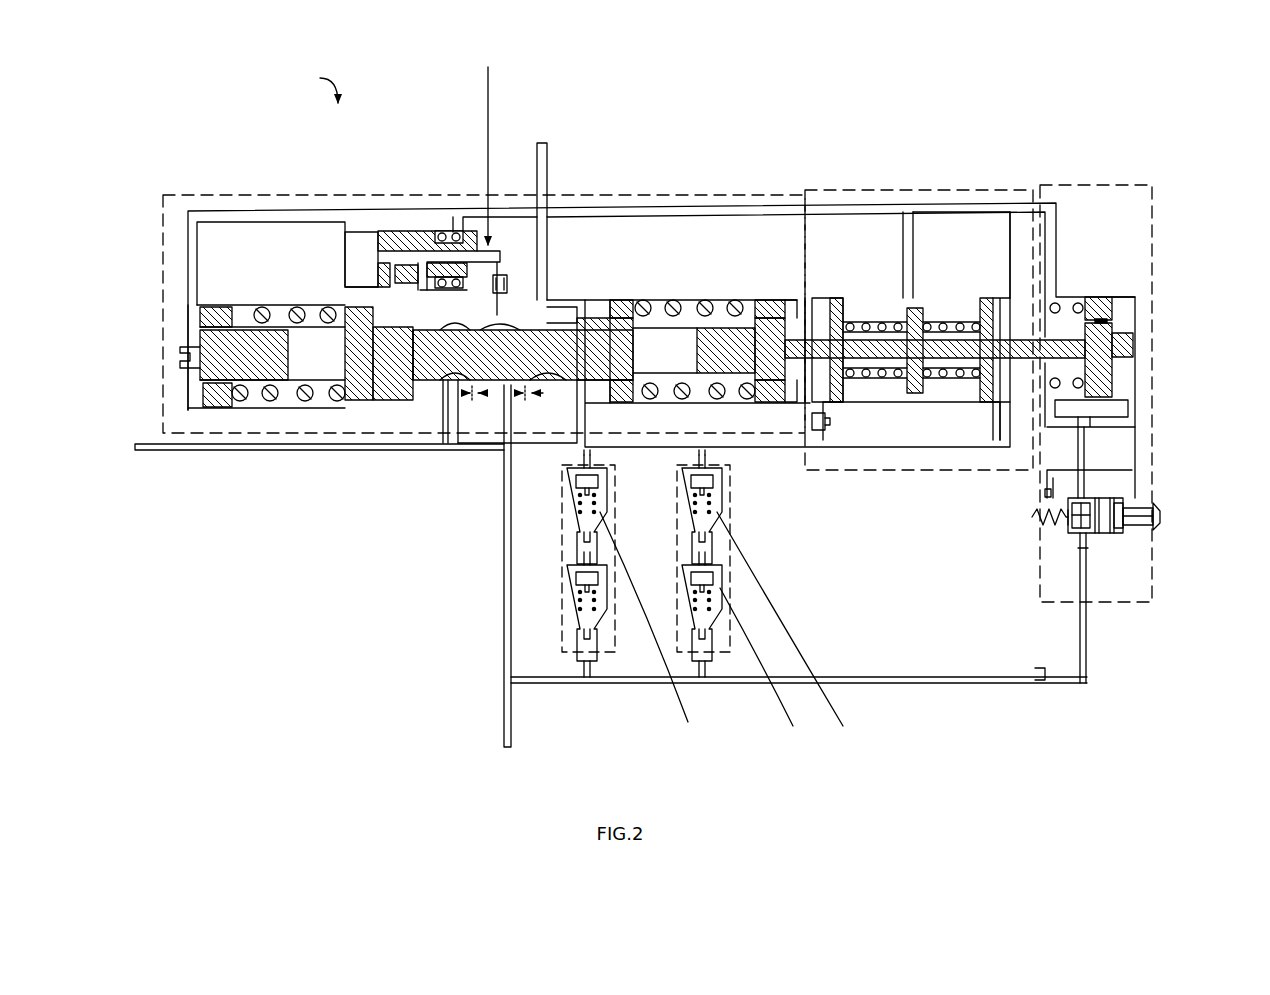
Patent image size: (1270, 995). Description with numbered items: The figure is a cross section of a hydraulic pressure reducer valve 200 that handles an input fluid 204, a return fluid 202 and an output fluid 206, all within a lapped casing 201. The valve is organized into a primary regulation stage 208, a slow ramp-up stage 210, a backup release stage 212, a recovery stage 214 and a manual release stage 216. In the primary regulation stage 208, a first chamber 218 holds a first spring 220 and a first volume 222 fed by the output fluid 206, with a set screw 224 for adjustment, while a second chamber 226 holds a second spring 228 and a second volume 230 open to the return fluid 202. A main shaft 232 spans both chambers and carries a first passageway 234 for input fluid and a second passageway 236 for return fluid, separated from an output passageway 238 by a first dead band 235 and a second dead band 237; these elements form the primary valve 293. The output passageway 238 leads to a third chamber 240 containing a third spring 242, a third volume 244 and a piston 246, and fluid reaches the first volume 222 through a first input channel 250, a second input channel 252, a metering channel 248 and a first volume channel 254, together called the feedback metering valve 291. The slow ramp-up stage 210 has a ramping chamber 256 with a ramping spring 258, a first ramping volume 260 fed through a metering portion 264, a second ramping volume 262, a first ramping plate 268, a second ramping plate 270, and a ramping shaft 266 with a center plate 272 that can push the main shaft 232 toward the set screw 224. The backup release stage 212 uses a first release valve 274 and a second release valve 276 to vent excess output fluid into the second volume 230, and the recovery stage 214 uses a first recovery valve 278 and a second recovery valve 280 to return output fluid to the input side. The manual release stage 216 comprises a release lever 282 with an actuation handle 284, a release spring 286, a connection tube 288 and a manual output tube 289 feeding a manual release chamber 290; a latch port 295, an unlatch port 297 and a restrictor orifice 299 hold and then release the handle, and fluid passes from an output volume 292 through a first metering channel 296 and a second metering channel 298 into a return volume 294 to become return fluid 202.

The pressure reducer valve 200 is at (310, 85).
The casing 201 is at (485, 141).
The return fluid 202 is at (547, 143).
The input fluid 204 is at (141, 451).
The output fluid 206 is at (504, 570).
The primary regulation stage 208 is at (320, 195).
The slow ramp-up stage 210 is at (878, 190).
The backup release stage 212 is at (615, 640).
The recovery stage 214 is at (730, 640).
The manual release stage 216 is at (1152, 600).
The first chamber 218 is at (186, 307).
The first spring 220 is at (258, 307).
The first volume 222 is at (290, 307).
The set screw 224 is at (184, 352).
The second chamber 226 is at (622, 300).
The second spring 228 is at (697, 300).
The second volume 230 is at (585, 300).
The main shaft 232 is at (413, 392).
The first passageway 234 is at (447, 402).
The first dead band 235 is at (473, 398).
The second passageway 236 is at (590, 352).
The second dead band 237 is at (526, 398).
The output passageway 238 is at (498, 250).
The third chamber 240 is at (350, 236).
The third spring 242 is at (446, 231).
The third volume 244 is at (380, 262).
The piston 246 is at (395, 231).
The metering channel 248 is at (392, 402).
The first input channel 250 is at (277, 412).
The second input channel 252 is at (430, 395).
The first volume channel 254 is at (418, 392).
The ramping chamber 256 is at (885, 298).
The ramping spring 258 is at (936, 298).
The first ramping volume 260 is at (822, 298).
The second ramping volume 262 is at (986, 298).
The metering portion 264 is at (830, 423).
The ramping shaft 266 is at (940, 402).
The first ramping plate 268 is at (812, 432).
The second ramping plate 270 is at (995, 402).
The center plate 272 is at (915, 398).
The first release valve 274 is at (566, 600).
The second release valve 276 is at (652, 629).
The first recovery valve 278 is at (765, 669).
The second recovery valve 280 is at (788, 629).
The release lever 282 is at (1088, 553).
The actuation handle 284 is at (1160, 517).
The release spring 286 is at (1036, 526).
The connection tube 288 is at (1112, 498).
The manual output tube 289 is at (1081, 492).
The manual release chamber 290 is at (1135, 297).
The feedback metering valve 291 is at (437, 228).
The output volume 292 is at (1133, 380).
The primary valve 293 is at (295, 412).
The return volume 294 is at (1071, 306).
The latch port 295 is at (1125, 507).
The first metering channel 296 is at (1107, 320).
The unlatch port 297 is at (1067, 511).
The second metering channel 298 is at (1092, 422).
The restrictor orifice 299 is at (1045, 494).